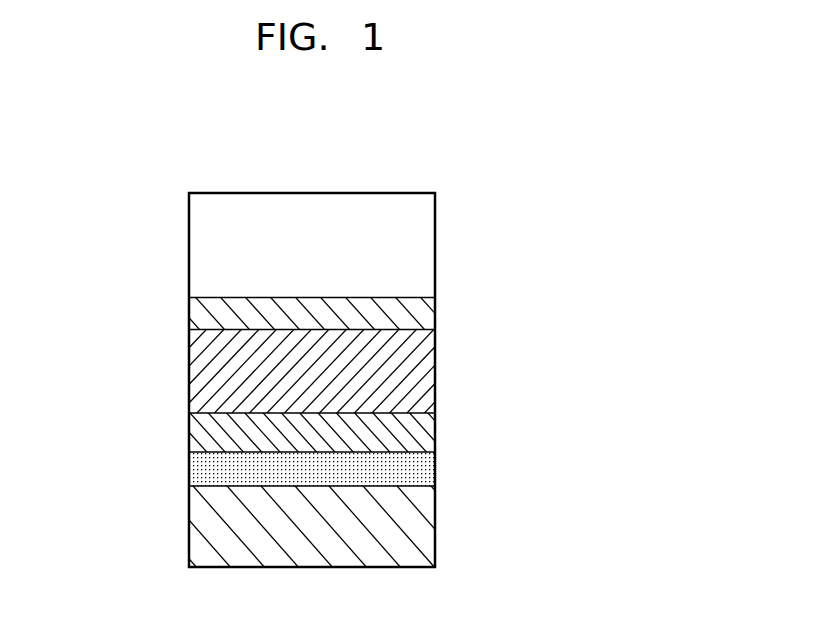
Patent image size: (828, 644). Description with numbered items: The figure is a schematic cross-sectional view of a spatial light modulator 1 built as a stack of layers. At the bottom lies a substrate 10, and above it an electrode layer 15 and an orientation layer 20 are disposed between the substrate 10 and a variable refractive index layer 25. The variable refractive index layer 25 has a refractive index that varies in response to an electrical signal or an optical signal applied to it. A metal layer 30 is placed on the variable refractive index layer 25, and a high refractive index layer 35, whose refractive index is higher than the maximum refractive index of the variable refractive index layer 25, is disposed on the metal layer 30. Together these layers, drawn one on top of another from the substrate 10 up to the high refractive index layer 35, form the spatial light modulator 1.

The spatial light modulator 1 is at (461, 174).
The substrate 10 is at (427, 523).
The electrode layer 15 is at (427, 467).
The orientation layer 20 is at (427, 432).
The variable refractive index layer 25 is at (427, 373).
The metal layer 30 is at (427, 313).
The high refractive index layer 35 is at (427, 250).